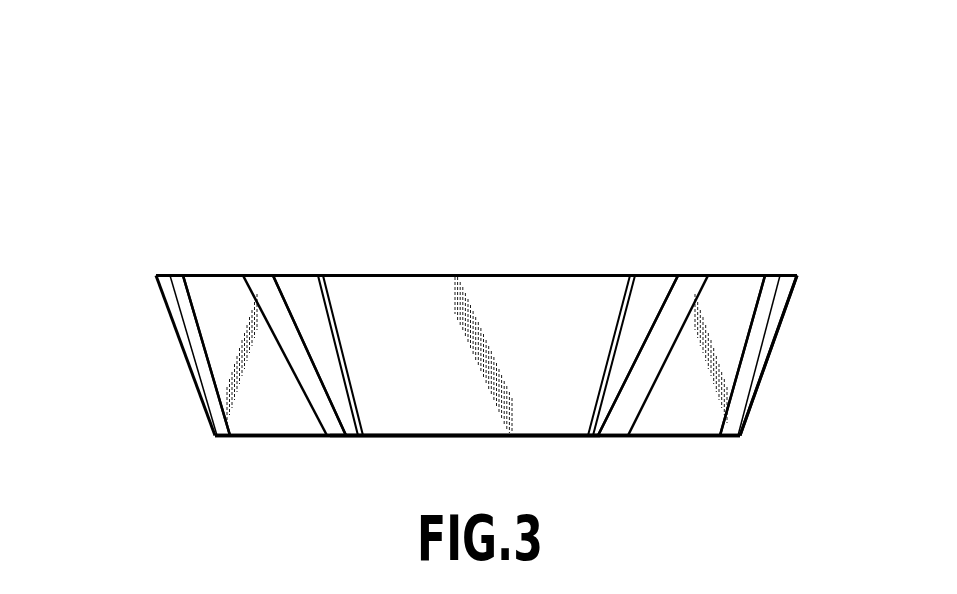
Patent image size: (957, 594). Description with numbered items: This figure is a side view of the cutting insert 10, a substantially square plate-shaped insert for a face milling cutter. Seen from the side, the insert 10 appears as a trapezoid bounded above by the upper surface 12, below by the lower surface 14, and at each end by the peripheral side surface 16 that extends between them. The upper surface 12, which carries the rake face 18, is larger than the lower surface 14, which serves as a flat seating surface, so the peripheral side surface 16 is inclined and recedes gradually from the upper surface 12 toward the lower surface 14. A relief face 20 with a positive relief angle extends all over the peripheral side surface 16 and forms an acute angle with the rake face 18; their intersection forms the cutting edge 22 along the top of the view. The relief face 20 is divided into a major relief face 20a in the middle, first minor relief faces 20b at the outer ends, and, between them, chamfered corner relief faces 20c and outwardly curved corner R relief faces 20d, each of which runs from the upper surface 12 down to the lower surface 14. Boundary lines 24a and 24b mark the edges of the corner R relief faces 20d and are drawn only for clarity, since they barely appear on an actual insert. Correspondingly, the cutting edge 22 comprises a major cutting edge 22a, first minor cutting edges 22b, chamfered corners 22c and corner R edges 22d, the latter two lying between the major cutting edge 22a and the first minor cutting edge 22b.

The cutting insert 10 is at (793, 100).
The upper surface 12 is at (557, 275).
The lower surface 14 is at (540, 438).
The peripheral side surface 16 is at (780, 330).
The rake face 18 is at (390, 275).
The relief face 20 is at (520, 290).
The major relief face 20a is at (433, 290).
The first minor relief face 20b is at (257, 427).
The chamfered corner relief face 20c is at (323, 342).
The corner R relief face 20d is at (215, 395).
The cutting edge 22 is at (355, 275).
The major cutting edge 22a is at (467, 275).
The first minor cutting edge 22b is at (220, 275).
The chamfered corner 22c is at (163, 275).
The corner R edge 22d is at (177, 275).
The boundary line 24a is at (207, 350).
The boundary line 24b is at (177, 295).